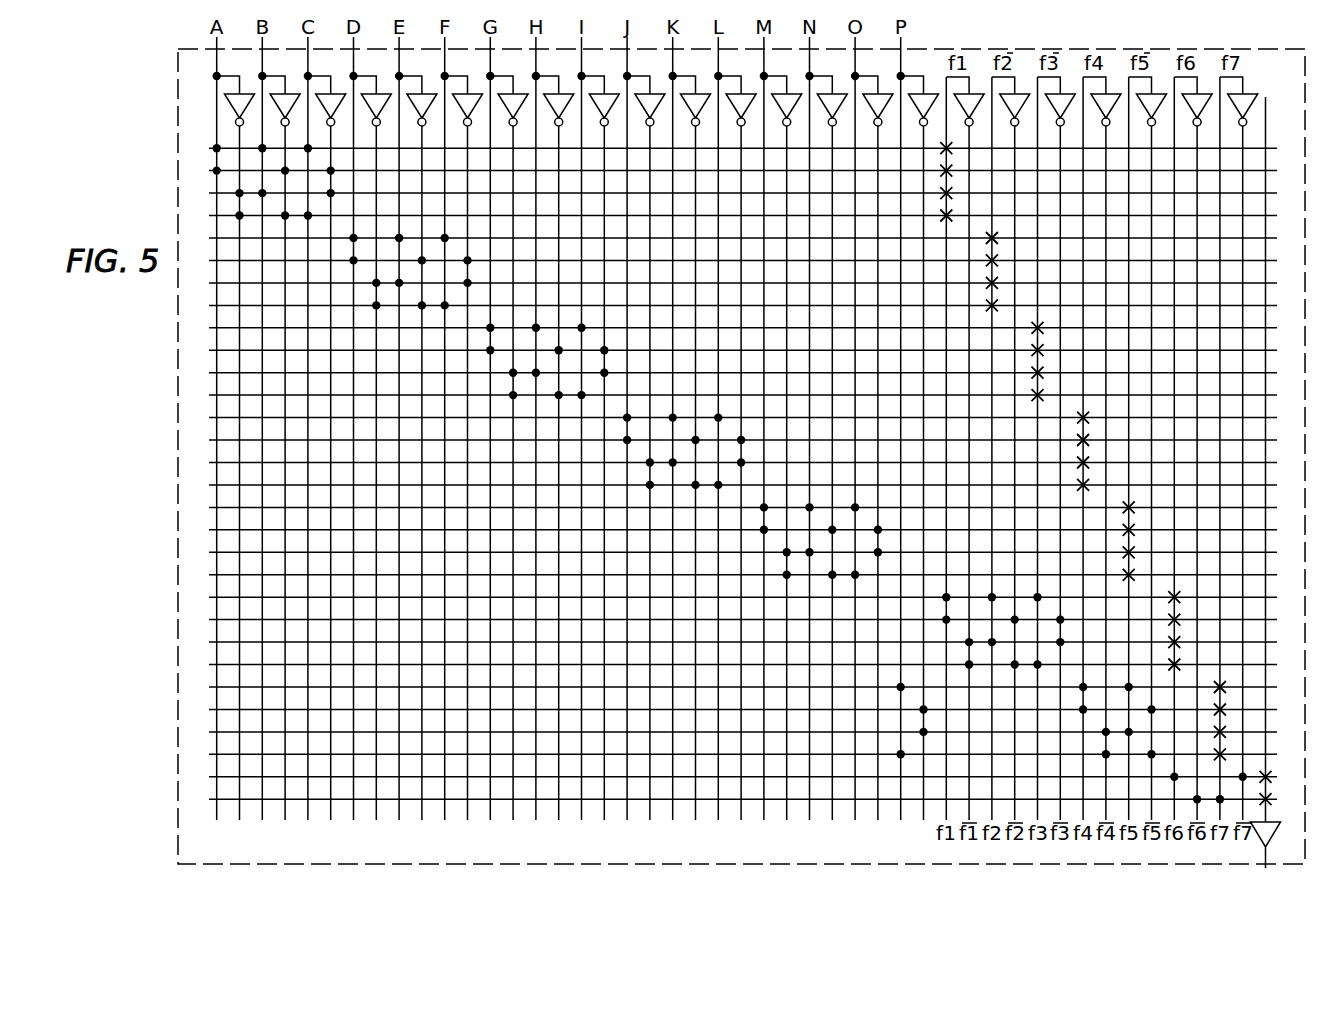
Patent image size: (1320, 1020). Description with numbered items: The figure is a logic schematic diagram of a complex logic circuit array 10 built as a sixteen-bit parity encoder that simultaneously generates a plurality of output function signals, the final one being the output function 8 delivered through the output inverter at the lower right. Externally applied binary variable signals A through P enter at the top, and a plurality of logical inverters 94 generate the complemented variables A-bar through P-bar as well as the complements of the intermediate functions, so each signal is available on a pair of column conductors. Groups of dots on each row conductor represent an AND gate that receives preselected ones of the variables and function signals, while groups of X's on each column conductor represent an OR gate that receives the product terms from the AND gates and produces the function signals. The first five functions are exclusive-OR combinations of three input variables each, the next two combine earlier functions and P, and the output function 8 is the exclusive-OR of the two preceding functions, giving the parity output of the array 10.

The logic circuit array 10 is at (188, 587).
The logical inverters 94 is at (238, 103).
The output inverter f8 8 is at (1266, 858).